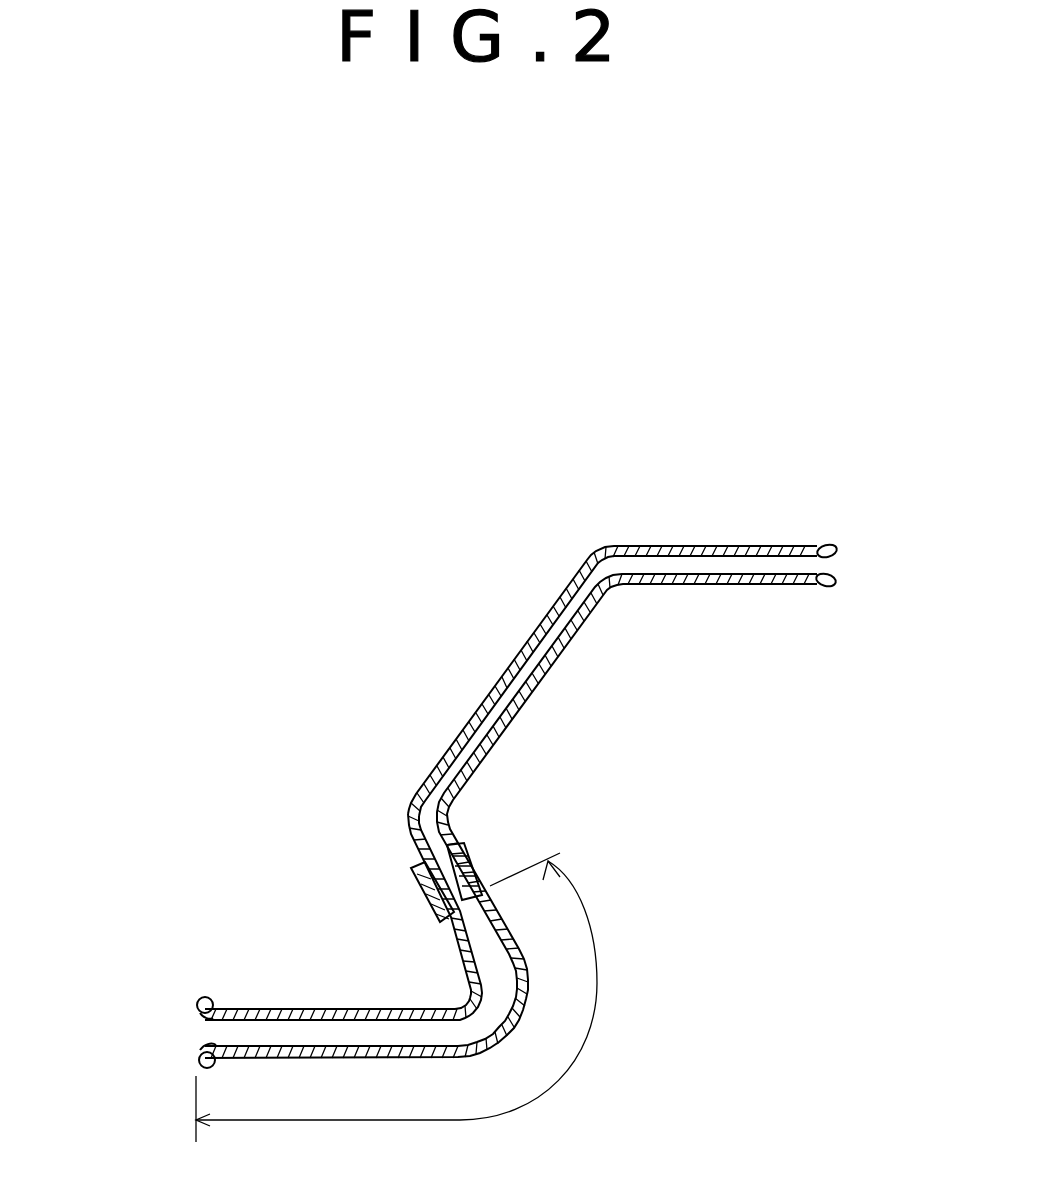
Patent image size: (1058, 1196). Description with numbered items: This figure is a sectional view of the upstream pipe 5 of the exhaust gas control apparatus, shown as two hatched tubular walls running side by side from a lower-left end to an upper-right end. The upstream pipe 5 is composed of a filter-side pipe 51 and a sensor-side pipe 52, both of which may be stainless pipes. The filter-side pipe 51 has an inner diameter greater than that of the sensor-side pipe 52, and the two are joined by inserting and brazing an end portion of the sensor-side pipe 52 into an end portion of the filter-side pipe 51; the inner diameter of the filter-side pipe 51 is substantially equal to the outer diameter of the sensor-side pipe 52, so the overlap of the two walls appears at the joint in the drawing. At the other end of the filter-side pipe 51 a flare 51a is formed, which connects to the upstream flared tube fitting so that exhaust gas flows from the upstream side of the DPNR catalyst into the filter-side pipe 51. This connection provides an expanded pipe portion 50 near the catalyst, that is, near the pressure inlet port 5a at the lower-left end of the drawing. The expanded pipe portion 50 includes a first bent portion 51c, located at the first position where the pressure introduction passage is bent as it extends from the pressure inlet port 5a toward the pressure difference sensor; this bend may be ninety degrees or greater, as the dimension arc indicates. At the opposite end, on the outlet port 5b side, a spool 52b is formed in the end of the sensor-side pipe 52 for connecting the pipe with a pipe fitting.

The upstream pipe 5 is at (373, 670).
The expanded pipe portion 50 is at (432, 1105).
The filter-side pipe 51 is at (333, 1007).
The sensor-side pipe 52 is at (520, 640).
The flare 51a is at (200, 992).
The first bent portion 51c is at (453, 995).
The spool 52b is at (826, 542).
The pressure inlet port 5a is at (200, 1033).
The outlet port 5b is at (830, 590).